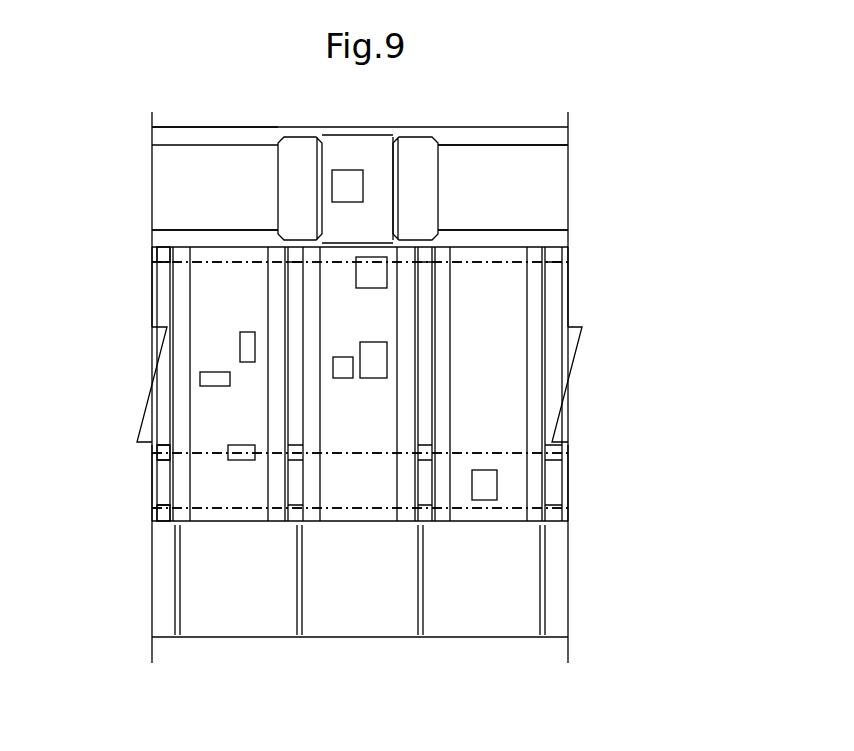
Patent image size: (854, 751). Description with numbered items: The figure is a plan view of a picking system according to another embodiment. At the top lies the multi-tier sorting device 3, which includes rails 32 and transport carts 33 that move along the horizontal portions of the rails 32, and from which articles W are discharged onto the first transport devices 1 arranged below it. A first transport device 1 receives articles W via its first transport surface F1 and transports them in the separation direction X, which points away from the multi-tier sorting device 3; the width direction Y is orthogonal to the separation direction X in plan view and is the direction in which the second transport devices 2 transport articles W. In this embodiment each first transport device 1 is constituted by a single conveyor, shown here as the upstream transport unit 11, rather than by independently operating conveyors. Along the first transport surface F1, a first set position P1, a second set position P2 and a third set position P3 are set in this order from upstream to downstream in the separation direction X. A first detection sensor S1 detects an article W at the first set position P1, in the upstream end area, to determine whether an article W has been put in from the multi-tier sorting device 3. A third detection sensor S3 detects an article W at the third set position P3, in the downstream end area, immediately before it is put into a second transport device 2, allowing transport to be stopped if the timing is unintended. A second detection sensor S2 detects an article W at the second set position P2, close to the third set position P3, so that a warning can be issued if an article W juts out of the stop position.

The first transport device 1 is at (205, 222).
The second transport device 2 is at (372, 625).
The multi-tier sorting device 3 is at (272, 172).
The upstream transport unit 11 is at (190, 355).
The rails 32 is at (502, 240).
The transport cart 33 is at (415, 160).
The article W is at (240, 352).
The first detection sensor S1 is at (153, 263).
The second detection sensor S2 is at (153, 447).
The third detection sensor S3 is at (153, 517).
The first set position P1 is at (210, 270).
The second set position P2 is at (212, 445).
The third set position P3 is at (240, 515).
The first transport surface F1 is at (495, 310).
The separation direction X is at (685, 255).
The width direction Y is at (740, 428).